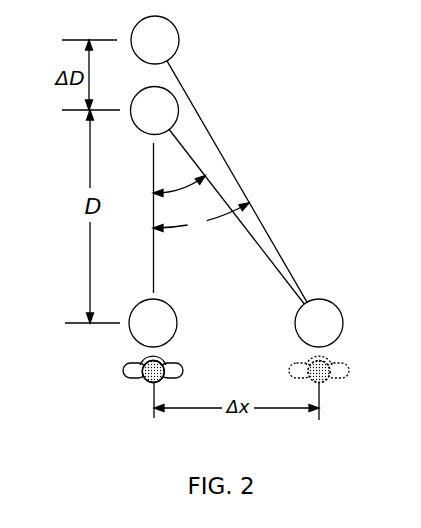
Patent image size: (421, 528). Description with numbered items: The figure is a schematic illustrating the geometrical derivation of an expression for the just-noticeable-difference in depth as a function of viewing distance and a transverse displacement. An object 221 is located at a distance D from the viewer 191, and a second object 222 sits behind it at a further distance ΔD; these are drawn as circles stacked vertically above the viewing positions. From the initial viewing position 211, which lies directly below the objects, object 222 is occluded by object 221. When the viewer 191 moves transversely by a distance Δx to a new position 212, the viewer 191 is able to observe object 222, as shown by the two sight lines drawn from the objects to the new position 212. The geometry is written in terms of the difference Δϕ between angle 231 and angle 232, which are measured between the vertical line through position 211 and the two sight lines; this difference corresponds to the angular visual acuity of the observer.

The object 222 is at (140, 50).
The object 221 is at (170, 120).
The viewing position 211 is at (138, 333).
The new position 212 is at (304, 333).
The angle 232 is at (183, 187).
The angle 231 is at (201, 218).
The viewer 191 is at (124, 370).